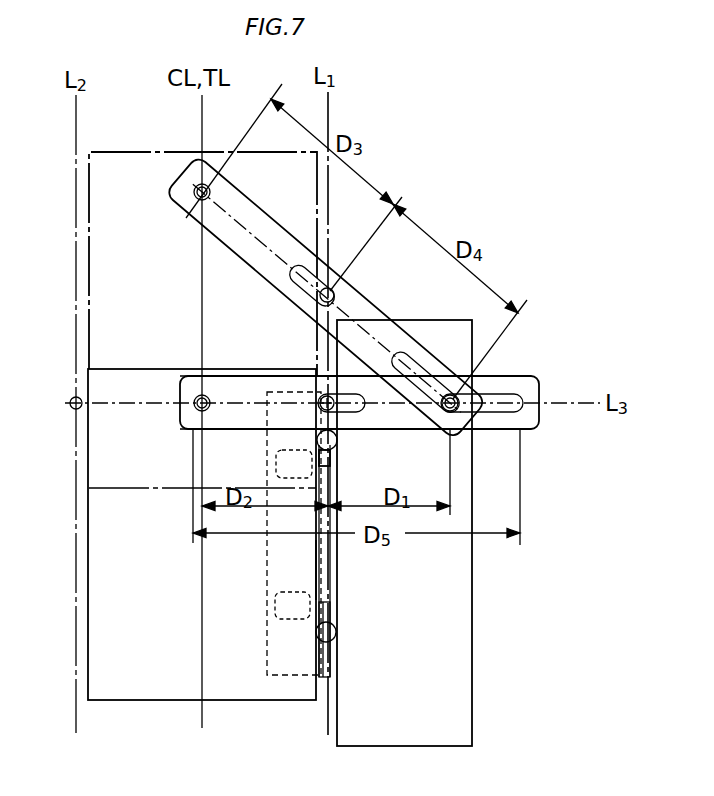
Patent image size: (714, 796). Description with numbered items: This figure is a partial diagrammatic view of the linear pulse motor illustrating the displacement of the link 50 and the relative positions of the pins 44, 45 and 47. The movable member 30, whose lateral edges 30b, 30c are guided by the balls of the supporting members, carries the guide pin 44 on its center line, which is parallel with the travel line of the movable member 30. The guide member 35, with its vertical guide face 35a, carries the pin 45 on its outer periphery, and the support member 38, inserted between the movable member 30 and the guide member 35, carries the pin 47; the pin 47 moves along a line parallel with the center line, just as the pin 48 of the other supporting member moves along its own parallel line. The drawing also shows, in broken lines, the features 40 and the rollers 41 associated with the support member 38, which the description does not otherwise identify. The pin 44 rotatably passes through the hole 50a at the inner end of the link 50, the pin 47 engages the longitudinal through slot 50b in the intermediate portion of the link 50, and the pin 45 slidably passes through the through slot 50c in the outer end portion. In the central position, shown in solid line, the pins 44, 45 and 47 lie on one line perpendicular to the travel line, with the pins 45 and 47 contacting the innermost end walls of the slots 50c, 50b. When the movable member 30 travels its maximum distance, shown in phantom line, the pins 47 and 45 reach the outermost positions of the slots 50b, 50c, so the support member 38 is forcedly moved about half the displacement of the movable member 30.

The movable member 30 is at (149, 692).
The lateral edge of the movable member 30b is at (90, 562).
The lateral edge of the movable member 30c is at (316, 572).
The guide member 35 is at (473, 612).
The vertical guide face 35a is at (338, 578).
The support member 38 is at (268, 655).
The elongated holes 40 is at (278, 595).
The rollers 41 is at (336, 632).
The guide pin 44 is at (157, 418).
The guide pin 45 is at (443, 413).
The guide pin 47 is at (320, 300).
The pin 48 is at (71, 398).
The link 50 is at (498, 430).
The hole 50a is at (210, 392).
The longitudinal through slot 50b is at (351, 430).
The through slot 50c is at (517, 392).